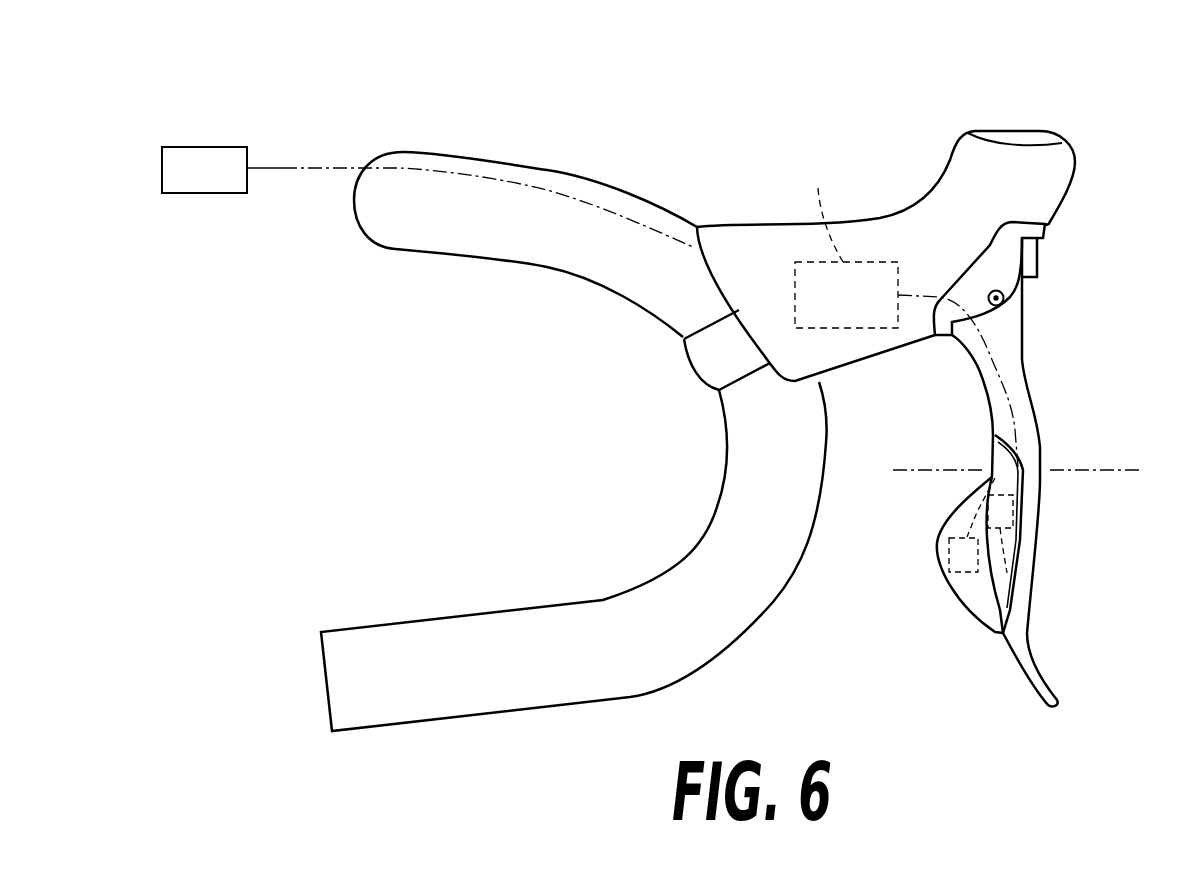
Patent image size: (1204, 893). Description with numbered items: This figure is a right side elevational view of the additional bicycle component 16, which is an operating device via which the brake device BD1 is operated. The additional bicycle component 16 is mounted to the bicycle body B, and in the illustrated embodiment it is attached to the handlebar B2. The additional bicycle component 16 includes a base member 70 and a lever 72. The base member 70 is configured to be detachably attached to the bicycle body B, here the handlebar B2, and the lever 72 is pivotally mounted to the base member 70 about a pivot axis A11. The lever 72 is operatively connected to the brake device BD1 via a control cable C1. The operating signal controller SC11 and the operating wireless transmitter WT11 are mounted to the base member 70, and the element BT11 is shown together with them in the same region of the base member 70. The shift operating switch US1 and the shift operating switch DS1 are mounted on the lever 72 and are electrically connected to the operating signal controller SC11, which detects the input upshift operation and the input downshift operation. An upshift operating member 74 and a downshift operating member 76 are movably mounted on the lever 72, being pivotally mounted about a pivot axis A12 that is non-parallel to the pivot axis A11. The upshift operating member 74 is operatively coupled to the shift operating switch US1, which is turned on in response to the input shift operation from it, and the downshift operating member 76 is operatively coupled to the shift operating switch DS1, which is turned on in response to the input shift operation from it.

The bicycle body B is at (574, 371).
The handlebar B2 is at (450, 147).
The control cable C1 is at (265, 167).
The brake device BD1 is at (221, 183).
The operating wireless transmitter WT11 is at (838, 211).
The operating signal controller SC11 is at (846, 229).
The battery BT11 is at (846, 245).
The additional bicycle component 16 is at (940, 418).
The base member 70 is at (1017, 250).
The pivot axis A11 is at (1005, 298).
The lever 72 is at (1027, 385).
The pivot axis A12 is at (1107, 472).
The upshift operating member 74 is at (1050, 534).
The downshift operating member 76 is at (936, 555).
The shift operating switch DS1 is at (937, 537).
The shift operating switch US1 is at (1013, 580).